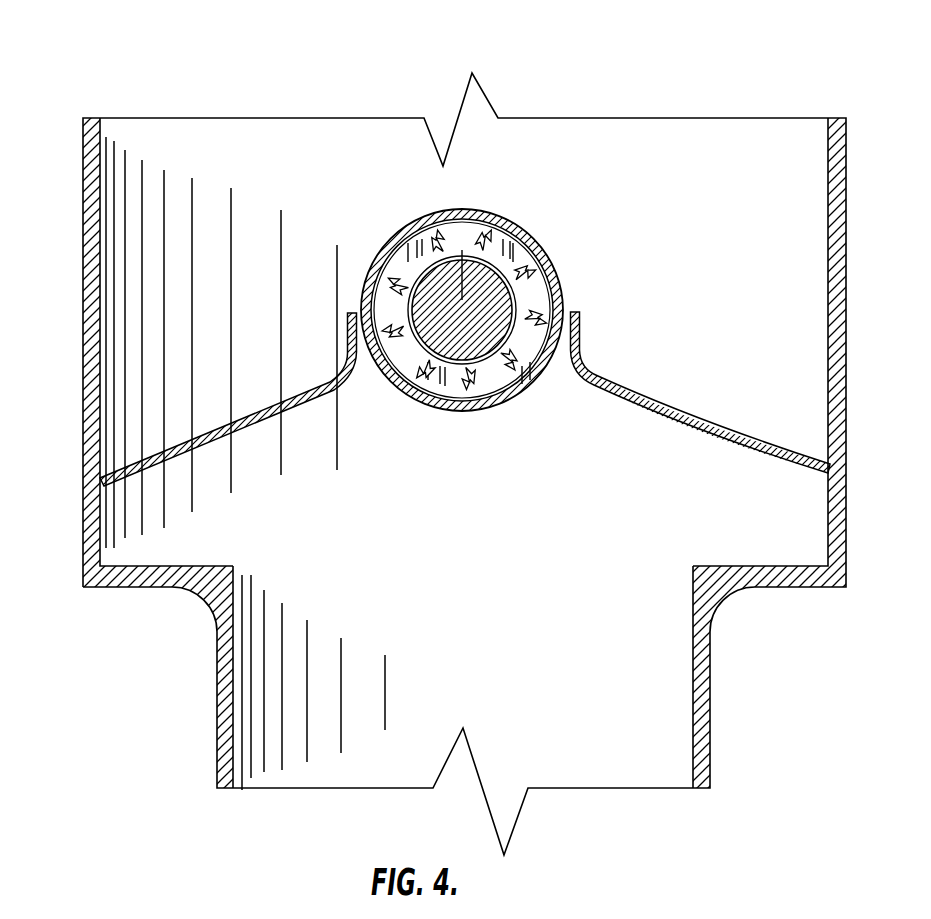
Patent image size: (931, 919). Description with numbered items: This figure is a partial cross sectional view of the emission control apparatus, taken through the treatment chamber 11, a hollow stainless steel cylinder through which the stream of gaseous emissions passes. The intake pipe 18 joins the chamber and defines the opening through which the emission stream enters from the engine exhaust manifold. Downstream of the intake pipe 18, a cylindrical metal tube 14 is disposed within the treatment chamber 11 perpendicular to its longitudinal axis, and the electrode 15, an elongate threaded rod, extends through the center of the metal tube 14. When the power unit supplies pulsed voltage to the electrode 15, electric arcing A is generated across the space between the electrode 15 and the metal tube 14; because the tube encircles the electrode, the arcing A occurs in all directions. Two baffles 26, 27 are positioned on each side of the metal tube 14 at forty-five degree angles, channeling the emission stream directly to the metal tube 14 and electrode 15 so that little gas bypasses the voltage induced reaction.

The treatment chamber 11 is at (837, 275).
The metal tube 14 is at (390, 237).
The electrode 15 is at (462, 300).
The intake pipe 18 is at (698, 663).
The baffle 26 is at (178, 443).
The baffle 27 is at (710, 425).
The electric arcing A is at (583, 335).